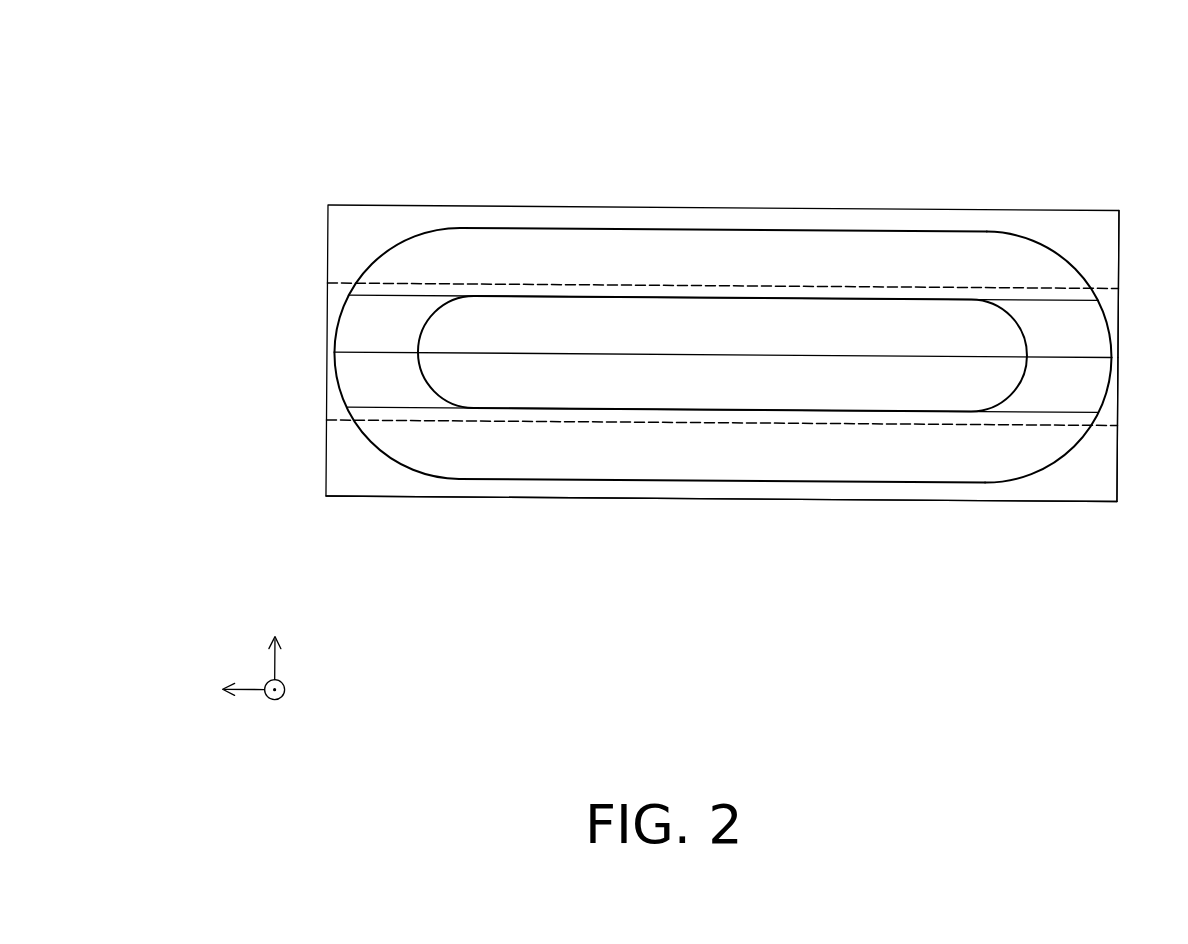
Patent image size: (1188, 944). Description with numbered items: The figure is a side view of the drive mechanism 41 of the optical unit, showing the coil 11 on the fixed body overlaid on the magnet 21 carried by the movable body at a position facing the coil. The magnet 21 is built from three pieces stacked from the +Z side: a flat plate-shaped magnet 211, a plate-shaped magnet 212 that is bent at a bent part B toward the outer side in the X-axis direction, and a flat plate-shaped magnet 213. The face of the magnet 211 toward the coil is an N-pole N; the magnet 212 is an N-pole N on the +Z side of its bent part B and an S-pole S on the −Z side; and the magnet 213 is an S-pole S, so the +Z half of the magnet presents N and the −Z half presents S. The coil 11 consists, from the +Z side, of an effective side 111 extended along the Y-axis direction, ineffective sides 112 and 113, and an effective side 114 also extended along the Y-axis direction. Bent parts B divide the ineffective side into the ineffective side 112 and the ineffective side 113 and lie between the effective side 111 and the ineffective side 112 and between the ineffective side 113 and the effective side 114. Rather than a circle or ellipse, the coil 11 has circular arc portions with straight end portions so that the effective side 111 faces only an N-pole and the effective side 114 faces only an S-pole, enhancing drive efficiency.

The drive mechanism 41 is at (1110, 132).
The coil 11 is at (668, 136).
The effective side 111 is at (675, 255).
The ineffective side 112 is at (1048, 325).
The ineffective side 113 is at (1043, 390).
The effective side 114 is at (722, 452).
The magnet 21 is at (255, 217).
The flat plate-shaped magnet 211 is at (323, 207).
The plate-shaped magnet 212 is at (323, 285).
The flat plate-shaped magnet 213 is at (323, 422).
The bent part B is at (357, 352).
The N-pole N is at (1107, 226).
The S-pole S is at (1112, 392).